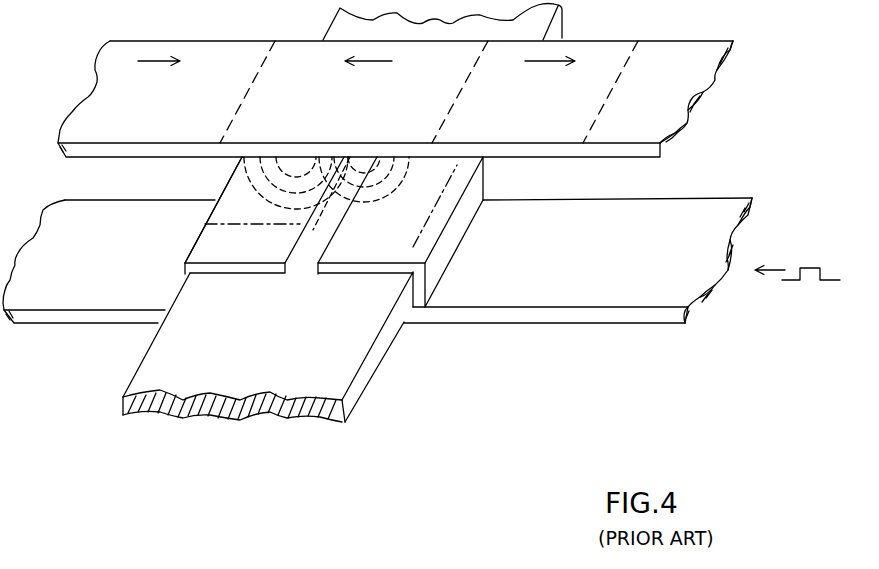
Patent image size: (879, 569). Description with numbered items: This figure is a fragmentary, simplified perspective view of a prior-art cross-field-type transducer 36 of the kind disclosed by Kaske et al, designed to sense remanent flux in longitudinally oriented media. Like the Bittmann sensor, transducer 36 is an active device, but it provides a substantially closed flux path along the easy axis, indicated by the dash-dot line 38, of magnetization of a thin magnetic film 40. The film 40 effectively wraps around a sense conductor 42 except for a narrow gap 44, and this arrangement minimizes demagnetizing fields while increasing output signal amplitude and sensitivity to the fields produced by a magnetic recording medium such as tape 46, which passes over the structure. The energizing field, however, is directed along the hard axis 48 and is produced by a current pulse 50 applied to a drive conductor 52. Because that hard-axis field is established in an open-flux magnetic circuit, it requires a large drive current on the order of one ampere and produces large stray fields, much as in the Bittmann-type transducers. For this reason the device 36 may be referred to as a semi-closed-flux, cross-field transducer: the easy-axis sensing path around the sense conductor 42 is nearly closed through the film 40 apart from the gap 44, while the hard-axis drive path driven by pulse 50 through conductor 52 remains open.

The cross-field-type transducer 36 is at (115, 336).
The easy axis 38 is at (248, 228).
The thin magnetic film 40 is at (212, 188).
The sense conductor 42 is at (348, 367).
The gap 44 is at (349, 208).
The tape 46 is at (540, 128).
The hard axis 48 is at (446, 213).
The current pulse 50 is at (811, 248).
The drive conductor 52 is at (590, 293).